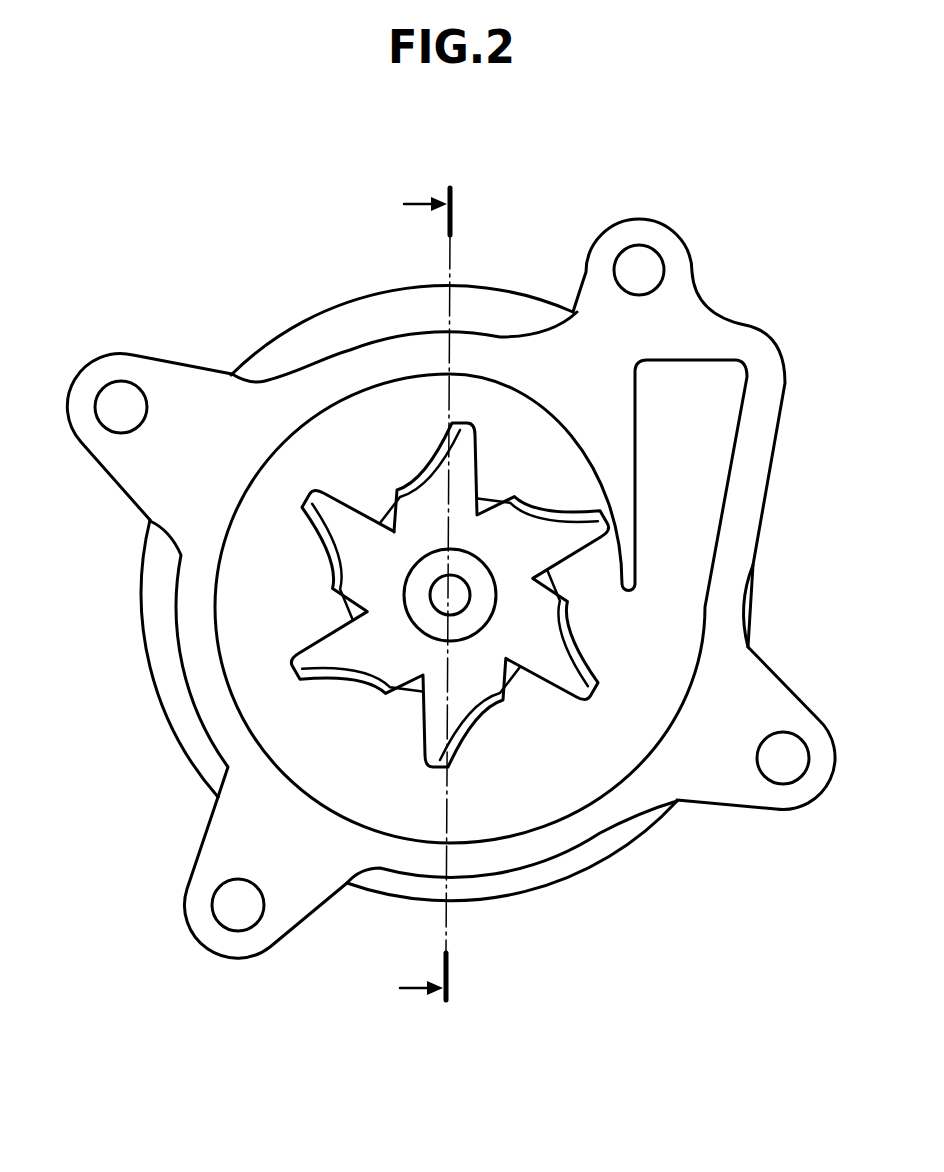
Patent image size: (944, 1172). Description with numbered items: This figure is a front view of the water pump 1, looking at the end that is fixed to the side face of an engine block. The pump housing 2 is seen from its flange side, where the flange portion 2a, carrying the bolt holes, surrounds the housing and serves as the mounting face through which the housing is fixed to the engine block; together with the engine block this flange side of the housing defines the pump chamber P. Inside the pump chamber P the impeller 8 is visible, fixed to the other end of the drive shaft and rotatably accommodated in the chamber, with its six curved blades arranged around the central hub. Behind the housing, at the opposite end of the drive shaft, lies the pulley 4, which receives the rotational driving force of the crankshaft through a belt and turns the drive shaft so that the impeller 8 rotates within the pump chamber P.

The water pump 1 is at (750, 209).
The pump housing 2 is at (197, 706).
The flange portion 2a is at (172, 378).
The pulley 4 is at (617, 853).
The impeller 8 is at (585, 658).
The pump chamber P is at (693, 495).